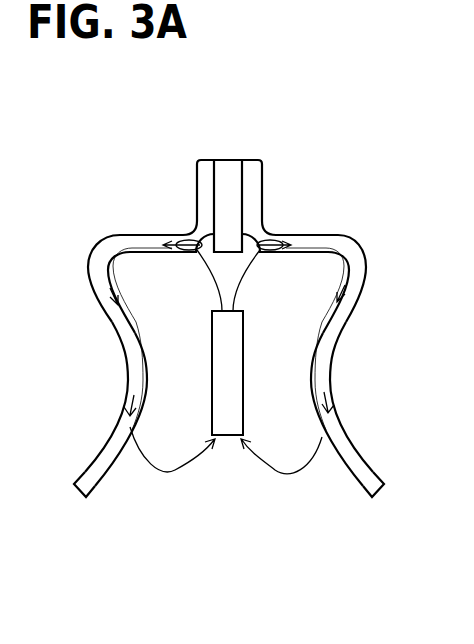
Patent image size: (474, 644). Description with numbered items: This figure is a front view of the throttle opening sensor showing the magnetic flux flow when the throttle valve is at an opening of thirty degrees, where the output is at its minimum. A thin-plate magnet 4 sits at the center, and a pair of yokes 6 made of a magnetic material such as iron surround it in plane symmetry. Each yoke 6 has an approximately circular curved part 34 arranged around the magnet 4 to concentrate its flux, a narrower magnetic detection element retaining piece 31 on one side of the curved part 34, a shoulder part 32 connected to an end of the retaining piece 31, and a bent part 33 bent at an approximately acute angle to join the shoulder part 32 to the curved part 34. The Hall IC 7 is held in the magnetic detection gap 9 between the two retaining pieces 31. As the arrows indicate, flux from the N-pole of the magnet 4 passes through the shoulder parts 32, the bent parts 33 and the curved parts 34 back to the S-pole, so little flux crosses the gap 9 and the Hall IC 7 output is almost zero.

The thin-plate magnet 4 is at (243, 358).
The yoke 6 is at (93, 490).
The Hall IC 7 is at (222, 192).
The magnetic detection gap 9 is at (228, 166).
The magnetic detection element retaining piece 31 is at (202, 158).
The shoulder part 32 is at (142, 234).
The bent part 33 is at (95, 253).
The curved part 34 is at (128, 372).